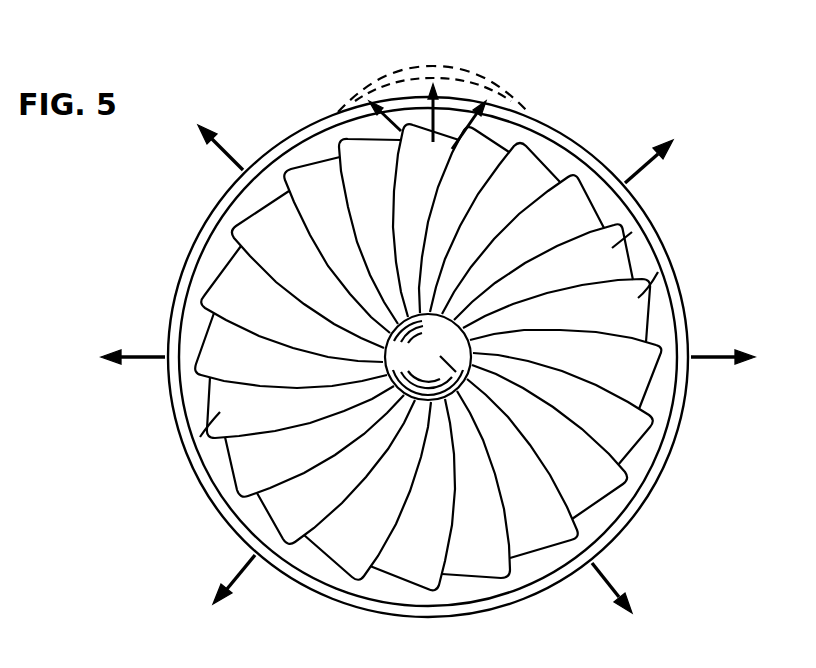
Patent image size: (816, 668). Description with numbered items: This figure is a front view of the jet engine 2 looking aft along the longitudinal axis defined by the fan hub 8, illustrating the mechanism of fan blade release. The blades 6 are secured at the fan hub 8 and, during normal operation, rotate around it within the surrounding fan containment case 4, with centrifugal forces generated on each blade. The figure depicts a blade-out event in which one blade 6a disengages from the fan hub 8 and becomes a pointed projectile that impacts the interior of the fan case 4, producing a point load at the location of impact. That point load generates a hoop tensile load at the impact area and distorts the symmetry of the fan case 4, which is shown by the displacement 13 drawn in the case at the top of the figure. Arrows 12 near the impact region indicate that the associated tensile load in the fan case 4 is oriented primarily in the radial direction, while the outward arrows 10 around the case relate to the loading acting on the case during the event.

The jet engine 2 is at (458, 336).
The fan containment case 4 is at (686, 106).
The blades 6 is at (426, 344).
The blade 6a is at (505, 128).
The fan hub 8 is at (495, 378).
The radial load direction arrows 10 is at (428, 373).
The arrows 12 is at (337, 130).
The displacement 13 is at (387, 84).